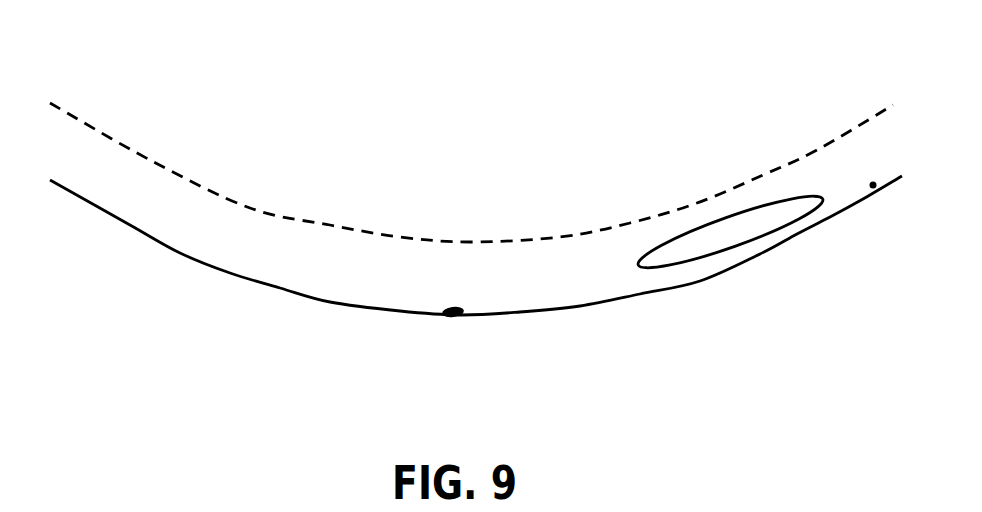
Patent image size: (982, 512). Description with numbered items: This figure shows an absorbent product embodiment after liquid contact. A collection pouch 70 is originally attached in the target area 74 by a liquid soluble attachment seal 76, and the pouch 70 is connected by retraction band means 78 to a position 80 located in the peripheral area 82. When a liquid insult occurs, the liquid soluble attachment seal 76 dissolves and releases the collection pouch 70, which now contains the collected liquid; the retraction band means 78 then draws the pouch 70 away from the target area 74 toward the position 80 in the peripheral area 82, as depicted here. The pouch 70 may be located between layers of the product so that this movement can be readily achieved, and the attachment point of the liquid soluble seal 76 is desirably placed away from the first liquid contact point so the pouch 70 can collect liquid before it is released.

The collection pouch 70 is at (745, 214).
The target area 74 is at (476, 189).
The liquid soluble attachment seal 76 is at (463, 310).
The retraction band means 78 is at (871, 186).
The position 80 is at (832, 230).
The peripheral area 82 is at (832, 126).